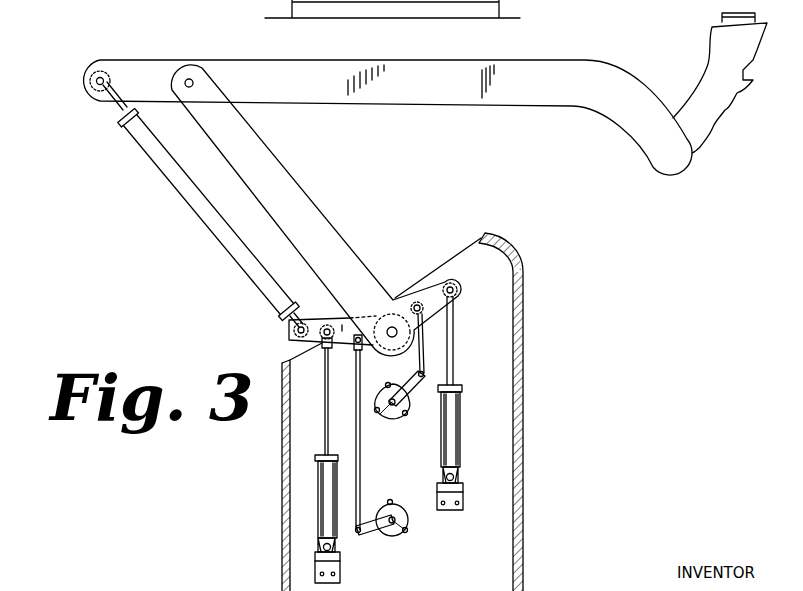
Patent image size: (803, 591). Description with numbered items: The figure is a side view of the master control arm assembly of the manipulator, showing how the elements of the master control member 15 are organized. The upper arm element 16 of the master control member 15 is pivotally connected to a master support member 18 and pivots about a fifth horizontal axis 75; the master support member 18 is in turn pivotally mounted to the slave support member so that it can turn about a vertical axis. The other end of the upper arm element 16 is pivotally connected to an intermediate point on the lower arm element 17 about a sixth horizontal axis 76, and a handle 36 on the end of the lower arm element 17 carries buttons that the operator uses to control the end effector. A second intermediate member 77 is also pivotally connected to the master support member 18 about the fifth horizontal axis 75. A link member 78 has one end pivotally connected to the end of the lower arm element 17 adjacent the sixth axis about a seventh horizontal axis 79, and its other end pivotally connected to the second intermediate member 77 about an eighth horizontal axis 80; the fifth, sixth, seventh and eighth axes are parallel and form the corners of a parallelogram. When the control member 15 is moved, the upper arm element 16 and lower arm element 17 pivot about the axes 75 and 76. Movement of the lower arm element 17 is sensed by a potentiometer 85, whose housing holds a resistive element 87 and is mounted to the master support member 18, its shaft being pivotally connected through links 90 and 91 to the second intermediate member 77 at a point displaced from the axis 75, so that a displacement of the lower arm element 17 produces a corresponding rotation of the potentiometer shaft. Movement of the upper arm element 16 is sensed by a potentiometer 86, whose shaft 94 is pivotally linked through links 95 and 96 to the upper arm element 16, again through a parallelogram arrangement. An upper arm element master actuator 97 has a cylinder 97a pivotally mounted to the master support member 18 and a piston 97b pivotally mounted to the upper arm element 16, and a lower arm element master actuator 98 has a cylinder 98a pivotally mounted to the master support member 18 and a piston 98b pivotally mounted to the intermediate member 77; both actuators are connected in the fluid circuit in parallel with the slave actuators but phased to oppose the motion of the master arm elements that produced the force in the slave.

The master control member 15 is at (442, 224).
The upper arm element 16 is at (318, 197).
The lower arm element 17 is at (502, 107).
The master support member 18 is at (523, 522).
The handle 36 is at (728, 97).
The fifth horizontal axis 75 is at (390, 327).
The sixth horizontal axis 76 is at (187, 78).
The second intermediate member 77 is at (320, 320).
The link member 78 is at (207, 223).
The seventh horizontal axis 79 is at (98, 77).
The eighth horizontal axis 80 is at (289, 330).
The potentiometer 85 is at (408, 517).
The potentiometer 86 is at (393, 414).
The resistive element 87 is at (395, 535).
The link 90 is at (360, 537).
The link 91 is at (360, 485).
The shaft 94 is at (383, 417).
The link 95 is at (417, 377).
The link 96 is at (425, 362).
The upper arm element master actuator 97 is at (462, 412).
The cylinder 97a is at (462, 458).
The piston 97b is at (455, 332).
The lower arm element master actuator 98 is at (318, 488).
The cylinder 98a is at (318, 517).
The piston 98b is at (282, 366).